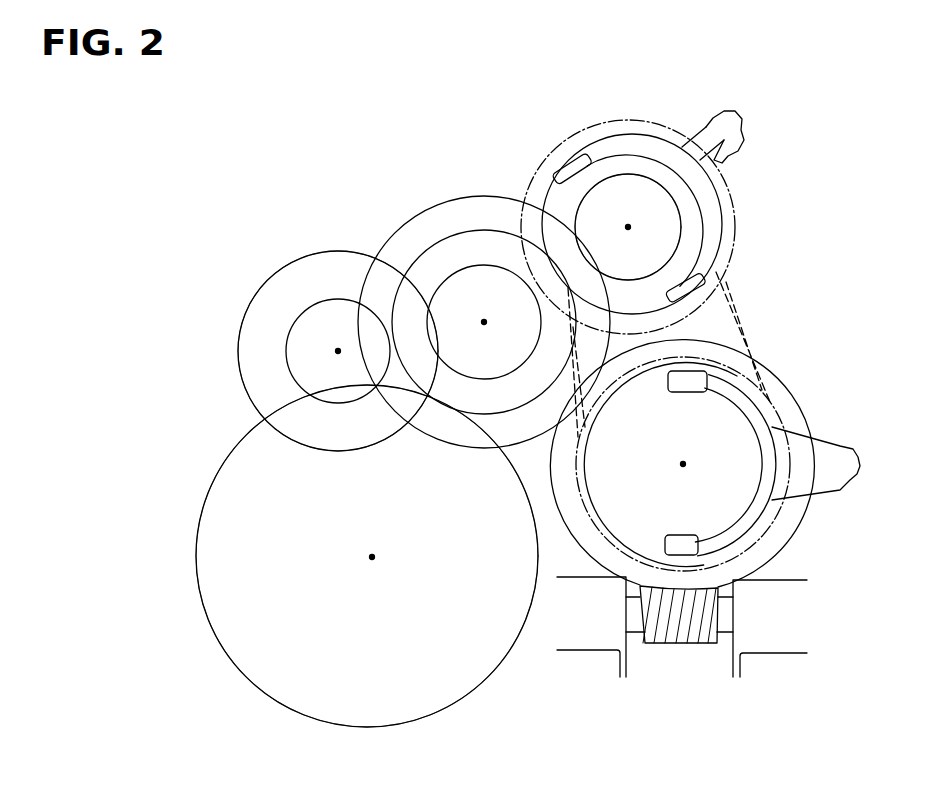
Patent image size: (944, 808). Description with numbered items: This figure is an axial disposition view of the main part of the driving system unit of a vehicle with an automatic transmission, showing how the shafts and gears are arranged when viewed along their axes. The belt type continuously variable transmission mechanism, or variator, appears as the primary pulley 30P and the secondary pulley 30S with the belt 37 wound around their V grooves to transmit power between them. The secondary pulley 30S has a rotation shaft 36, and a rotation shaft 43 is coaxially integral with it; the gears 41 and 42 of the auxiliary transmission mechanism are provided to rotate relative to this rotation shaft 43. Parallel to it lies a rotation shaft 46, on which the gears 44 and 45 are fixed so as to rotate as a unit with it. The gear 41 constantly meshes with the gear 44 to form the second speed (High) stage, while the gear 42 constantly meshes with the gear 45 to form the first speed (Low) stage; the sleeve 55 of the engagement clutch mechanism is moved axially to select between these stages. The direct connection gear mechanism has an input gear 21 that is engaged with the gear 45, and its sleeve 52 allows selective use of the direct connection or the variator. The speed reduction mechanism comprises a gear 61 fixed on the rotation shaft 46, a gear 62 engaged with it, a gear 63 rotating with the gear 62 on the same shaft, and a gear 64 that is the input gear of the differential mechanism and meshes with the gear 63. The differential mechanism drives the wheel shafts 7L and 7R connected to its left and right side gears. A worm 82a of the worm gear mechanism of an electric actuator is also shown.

The input gear 21 is at (783, 390).
The primary pulley 30P is at (777, 520).
The secondary pulley 30S is at (663, 125).
The rotation shaft 36 is at (712, 227).
The rotation shaft 43 is at (632, 232).
The belt 37 is at (753, 330).
The gear 41 is at (560, 197).
The gear 42 is at (615, 183).
The gear 44 is at (451, 238).
The gear 45 is at (422, 213).
The rotation shaft 46 is at (339, 343).
The sleeve 52 is at (836, 443).
The sleeve 55 is at (740, 123).
The gear 61 is at (495, 268).
The gear 62 is at (247, 314).
The gear 63 is at (288, 350).
The gear 64 is at (224, 472).
The wheel shaft 7L is at (367, 556).
The wheel shaft 7R is at (372, 567).
The worm 82a is at (680, 645).